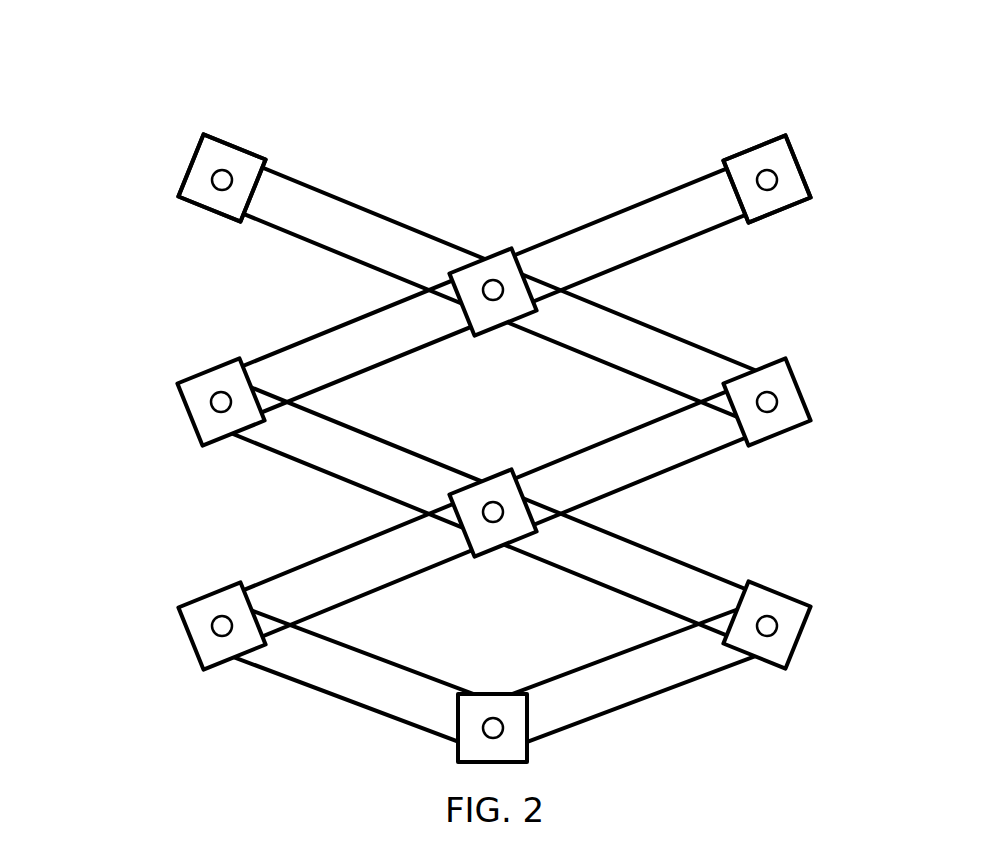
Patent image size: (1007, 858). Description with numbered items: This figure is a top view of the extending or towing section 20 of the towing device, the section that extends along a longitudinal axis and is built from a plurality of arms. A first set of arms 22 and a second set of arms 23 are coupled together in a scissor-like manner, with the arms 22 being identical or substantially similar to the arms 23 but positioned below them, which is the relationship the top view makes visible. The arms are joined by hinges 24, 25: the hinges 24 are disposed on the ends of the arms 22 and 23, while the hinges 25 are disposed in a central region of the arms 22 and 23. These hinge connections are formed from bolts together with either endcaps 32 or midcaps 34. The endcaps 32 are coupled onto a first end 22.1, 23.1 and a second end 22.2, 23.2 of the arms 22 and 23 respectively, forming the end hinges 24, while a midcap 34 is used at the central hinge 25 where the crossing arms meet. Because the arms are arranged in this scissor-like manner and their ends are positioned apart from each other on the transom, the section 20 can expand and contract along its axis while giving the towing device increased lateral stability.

The towing section 20 is at (481, 387).
The first set of arms 22 is at (313, 210).
The first end of arm 22 22.1 is at (168, 154).
The second end of arm 22 22.2 is at (818, 382).
The second set of arms 23 is at (367, 353).
The first end of arm 23 23.1 is at (812, 153).
The second end of arm 23 23.2 is at (172, 398).
The hinges 24 is at (222, 176).
The hinges 25 is at (764, 393).
The endcaps 32 is at (188, 186).
The midcaps 34 is at (502, 262).